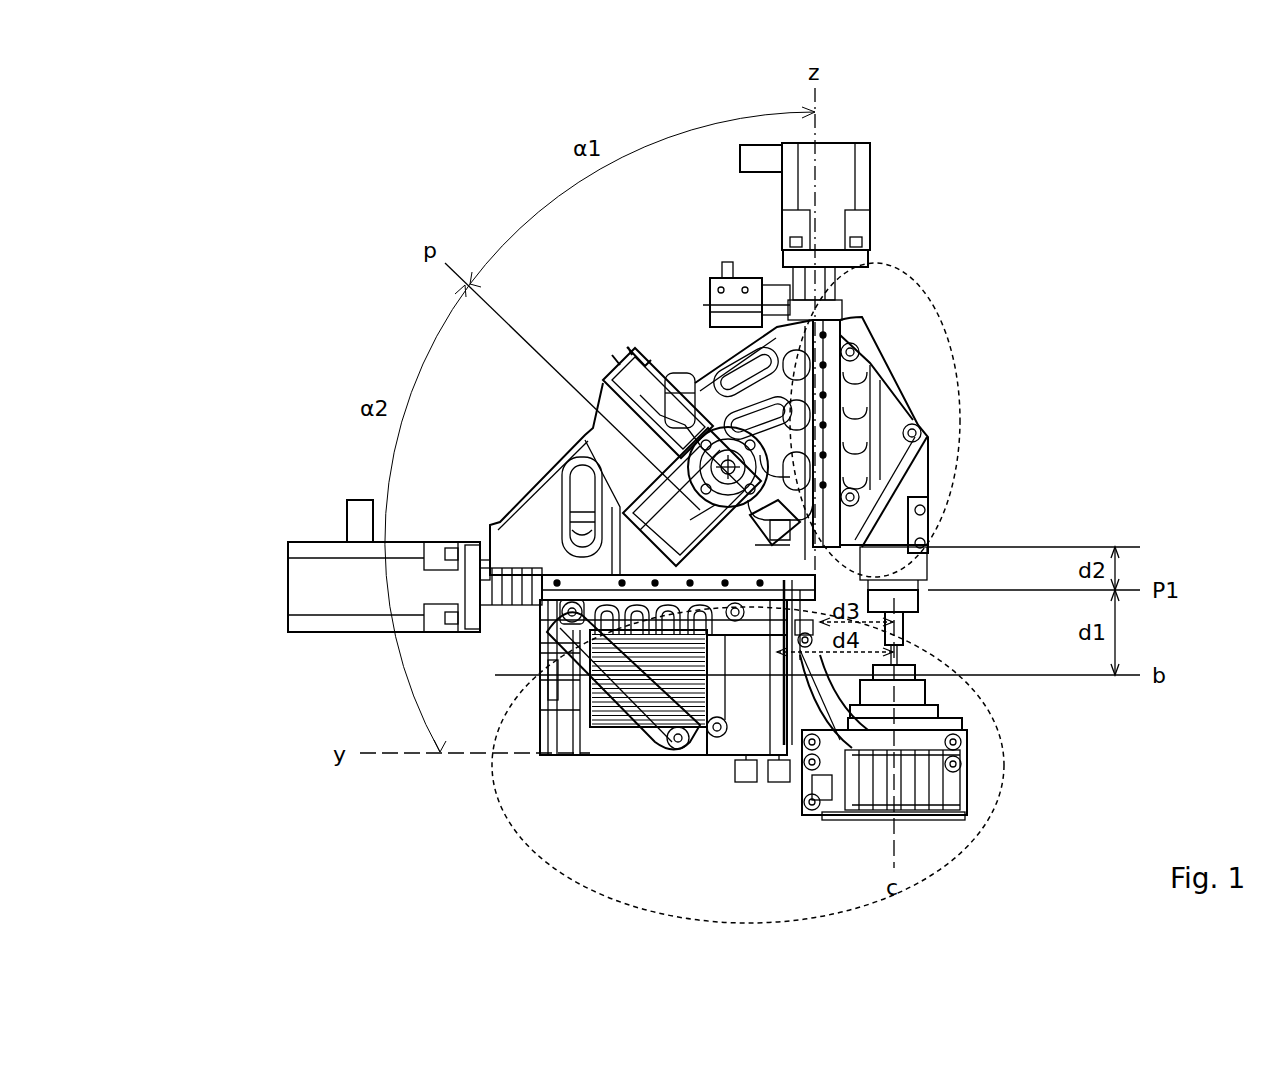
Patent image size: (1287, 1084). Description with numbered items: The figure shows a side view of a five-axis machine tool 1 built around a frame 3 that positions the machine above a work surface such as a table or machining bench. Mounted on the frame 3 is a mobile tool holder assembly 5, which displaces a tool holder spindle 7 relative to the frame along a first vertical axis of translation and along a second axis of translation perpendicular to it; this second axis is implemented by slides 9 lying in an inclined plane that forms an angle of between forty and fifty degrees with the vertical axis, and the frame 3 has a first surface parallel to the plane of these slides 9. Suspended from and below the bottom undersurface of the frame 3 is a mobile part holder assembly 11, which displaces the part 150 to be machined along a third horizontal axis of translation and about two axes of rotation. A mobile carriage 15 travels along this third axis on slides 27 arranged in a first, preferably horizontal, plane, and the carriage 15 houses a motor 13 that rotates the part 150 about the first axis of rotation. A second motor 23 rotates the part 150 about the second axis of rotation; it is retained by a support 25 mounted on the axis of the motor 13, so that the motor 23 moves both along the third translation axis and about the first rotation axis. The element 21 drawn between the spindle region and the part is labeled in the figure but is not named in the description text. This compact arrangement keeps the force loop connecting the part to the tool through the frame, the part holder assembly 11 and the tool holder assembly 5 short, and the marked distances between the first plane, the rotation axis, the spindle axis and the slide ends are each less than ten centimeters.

The machine tool 1 is at (268, 722).
The frame 3 is at (543, 497).
The mobile tool holder assembly 5 is at (935, 290).
The tool holder spindle 7 is at (918, 527).
The slides 9 is at (666, 420).
The mobile part holder assembly 11 is at (505, 822).
The motor 13 is at (650, 705).
The mobile carriage 15 is at (752, 728).
The spindle 21 is at (897, 655).
The motor 23 is at (920, 785).
The support 25 is at (838, 760).
The slides 27 is at (597, 593).
The part 150 is at (903, 677).